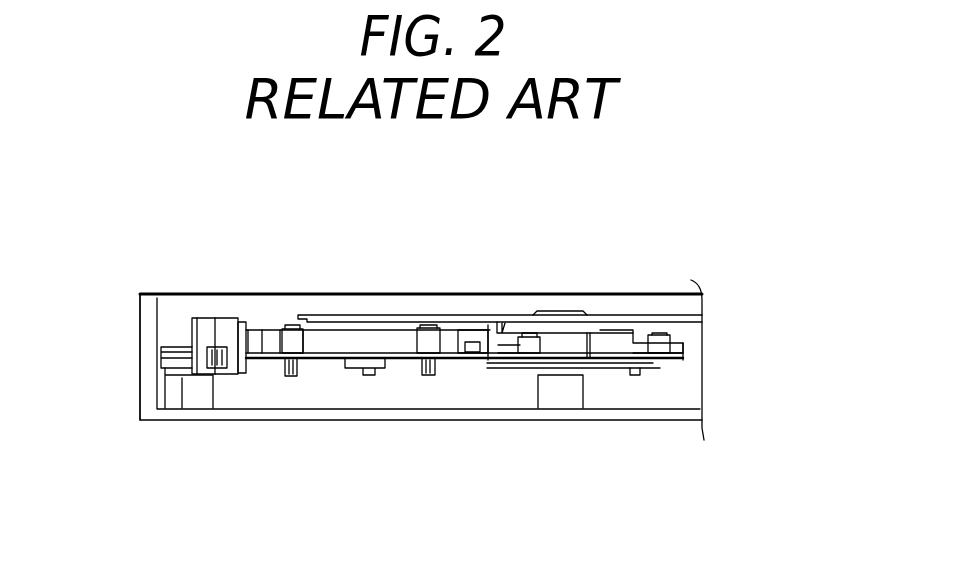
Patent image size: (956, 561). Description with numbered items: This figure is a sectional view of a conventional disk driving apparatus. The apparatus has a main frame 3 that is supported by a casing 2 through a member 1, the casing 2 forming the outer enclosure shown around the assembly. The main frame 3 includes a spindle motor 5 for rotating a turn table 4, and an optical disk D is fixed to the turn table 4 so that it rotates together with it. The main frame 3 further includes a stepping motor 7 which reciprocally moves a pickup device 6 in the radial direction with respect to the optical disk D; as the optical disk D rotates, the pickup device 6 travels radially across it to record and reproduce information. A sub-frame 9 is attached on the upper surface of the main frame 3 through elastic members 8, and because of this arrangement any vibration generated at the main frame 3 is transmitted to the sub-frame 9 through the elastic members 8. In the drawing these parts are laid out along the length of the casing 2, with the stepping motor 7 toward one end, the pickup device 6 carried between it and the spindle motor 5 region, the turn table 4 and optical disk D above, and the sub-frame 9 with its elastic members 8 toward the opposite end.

The member 1 is at (183, 407).
The casing 2 is at (150, 412).
The main frame 3 is at (335, 332).
The turn table 4 is at (480, 357).
The spindle motor 5 is at (588, 357).
The pickup device 6 is at (473, 355).
The stepping motor 7 is at (233, 378).
The elastic members 8 is at (681, 360).
The sub-frame 9 is at (637, 375).
The optical disk D is at (653, 323).